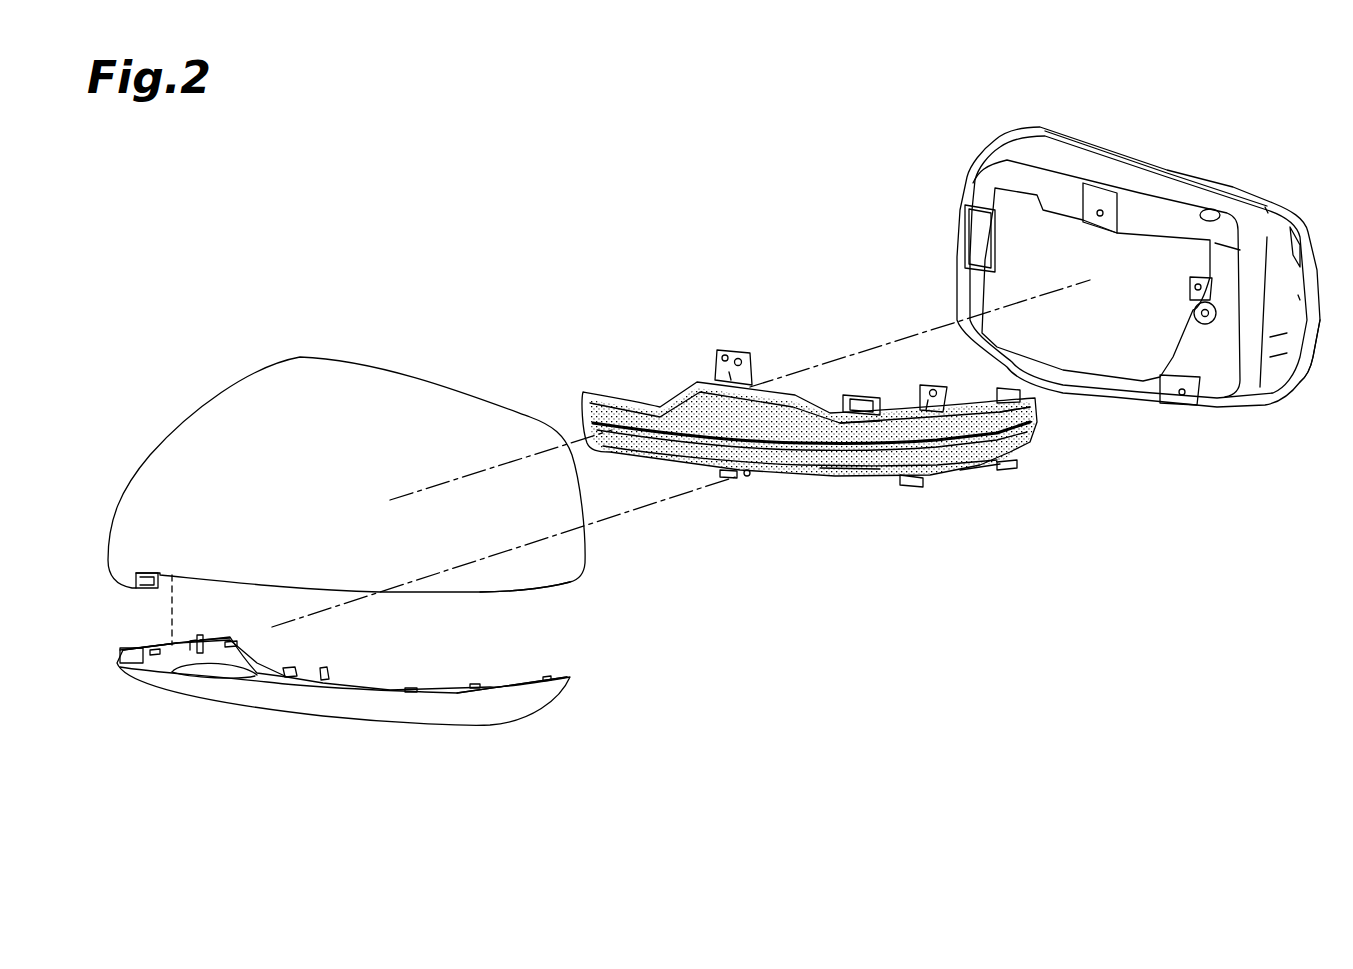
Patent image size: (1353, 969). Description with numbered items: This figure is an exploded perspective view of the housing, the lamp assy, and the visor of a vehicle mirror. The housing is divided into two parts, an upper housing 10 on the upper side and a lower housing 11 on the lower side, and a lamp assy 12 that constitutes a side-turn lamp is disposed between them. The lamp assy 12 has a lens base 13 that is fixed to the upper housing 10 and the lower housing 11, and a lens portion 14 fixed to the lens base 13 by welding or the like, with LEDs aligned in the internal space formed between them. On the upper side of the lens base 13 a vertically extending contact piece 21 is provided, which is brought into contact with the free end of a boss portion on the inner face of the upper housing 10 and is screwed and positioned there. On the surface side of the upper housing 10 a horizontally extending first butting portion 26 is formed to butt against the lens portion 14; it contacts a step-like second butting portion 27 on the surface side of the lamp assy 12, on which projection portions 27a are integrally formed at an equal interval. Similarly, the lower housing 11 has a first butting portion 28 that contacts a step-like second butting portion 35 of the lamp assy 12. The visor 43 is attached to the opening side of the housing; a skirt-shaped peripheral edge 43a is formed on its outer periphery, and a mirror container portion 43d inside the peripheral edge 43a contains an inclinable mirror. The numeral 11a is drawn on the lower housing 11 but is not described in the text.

The upper housing 10 is at (263, 403).
The lower housing 11 is at (497, 710).
The engaging claws of lower cover 11a is at (147, 651).
The lamp assy 12 is at (660, 370).
The lens base 13 is at (973, 407).
The lens portion 14 is at (850, 457).
The contact piece 21 is at (737, 352).
The first butting portion 26 is at (523, 588).
The second butting portion 27 is at (1032, 418).
The projection portions 27a is at (868, 413).
The first butting portion 28 is at (507, 685).
The second butting portion 35 is at (980, 467).
The visor 43 is at (985, 142).
The peripheral edge 43a is at (1300, 370).
The mirror container portion 43d is at (1227, 363).